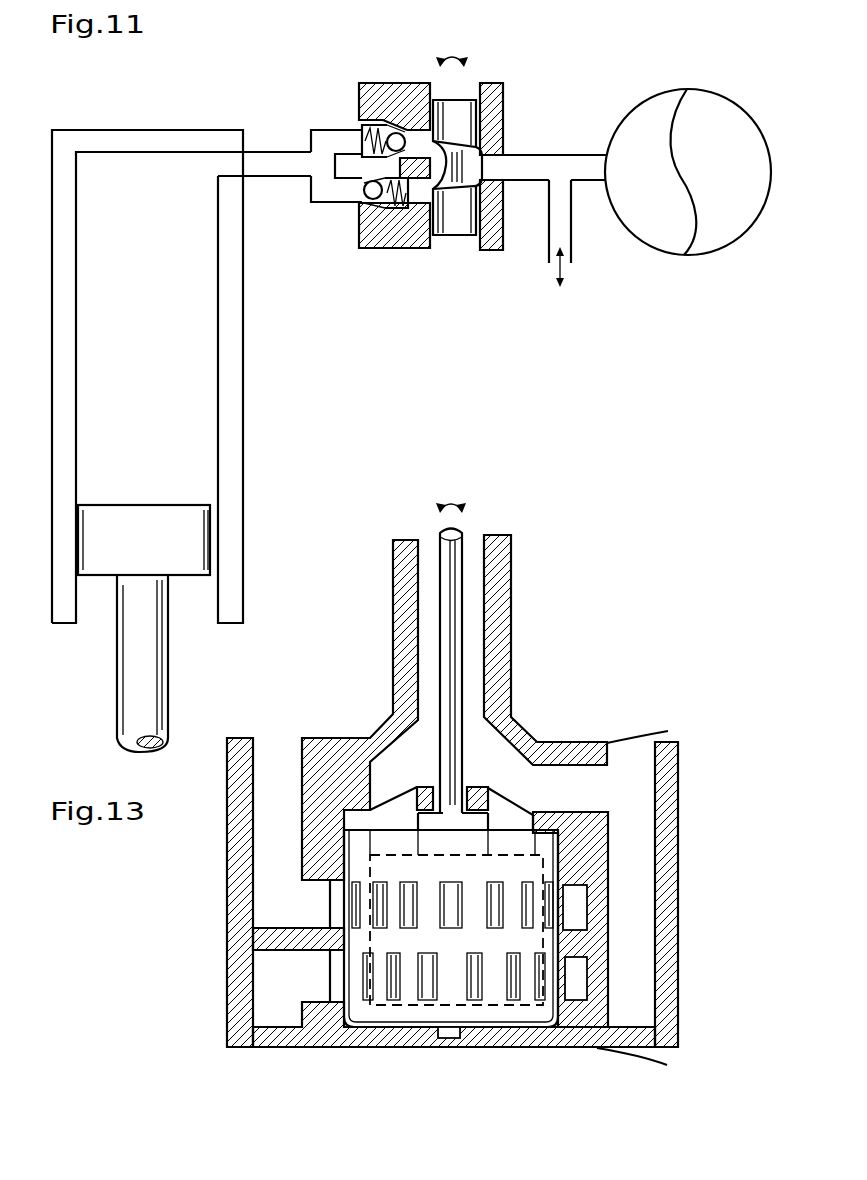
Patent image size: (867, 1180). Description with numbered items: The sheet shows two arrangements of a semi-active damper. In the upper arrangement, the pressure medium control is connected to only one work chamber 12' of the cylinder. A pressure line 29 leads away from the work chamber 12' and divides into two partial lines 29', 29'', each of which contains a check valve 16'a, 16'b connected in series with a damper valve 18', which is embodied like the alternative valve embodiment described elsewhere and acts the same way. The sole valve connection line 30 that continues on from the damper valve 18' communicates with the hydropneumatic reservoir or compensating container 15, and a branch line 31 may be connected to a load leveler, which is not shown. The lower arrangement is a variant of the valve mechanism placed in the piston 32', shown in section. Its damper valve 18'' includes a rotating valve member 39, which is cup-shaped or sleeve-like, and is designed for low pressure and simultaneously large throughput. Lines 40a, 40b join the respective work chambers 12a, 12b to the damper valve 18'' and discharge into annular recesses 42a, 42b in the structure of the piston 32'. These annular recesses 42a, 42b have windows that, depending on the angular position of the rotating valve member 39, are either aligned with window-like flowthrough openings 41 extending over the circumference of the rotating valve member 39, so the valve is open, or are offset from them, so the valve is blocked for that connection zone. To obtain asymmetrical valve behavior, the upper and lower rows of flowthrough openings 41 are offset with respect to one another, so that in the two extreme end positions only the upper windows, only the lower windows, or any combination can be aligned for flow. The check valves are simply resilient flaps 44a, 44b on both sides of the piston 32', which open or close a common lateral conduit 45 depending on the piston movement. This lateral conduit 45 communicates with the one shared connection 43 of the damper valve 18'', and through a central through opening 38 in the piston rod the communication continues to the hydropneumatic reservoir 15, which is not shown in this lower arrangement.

In FIG. 11, the work chamber 12' is at (147, 406).
In FIG. 11, the pressure line 29 is at (264, 92).
In FIG. 11, the partial line 29' is at (336, 105).
In FIG. 11, the partial line 29'' is at (326, 225).
In FIG. 11, the check valve 16'a is at (399, 82).
In FIG. 11, the check valve 16'b is at (391, 237).
In FIG. 11, the damper valve 18' is at (456, 129).
In FIG. 11, the valve connection line 30 is at (543, 165).
In FIG. 11, the branch line 31 is at (570, 222).
In FIG. 11, the hydropneumatic reservoir 15 is at (650, 115).
In FIG. 13, the central through opening 38 is at (481, 563).
In FIG. 13, the work chamber 12a is at (354, 710).
In FIG. 13, the work chamber 12b is at (438, 1057).
In FIG. 13, the shared connection 43 is at (513, 778).
In FIG. 13, the resilient flap 44a is at (628, 738).
In FIG. 13, the resilient flap 44b is at (630, 1055).
In FIG. 13, the lateral conduit 45 is at (656, 850).
In FIG. 13, the annular recess 42a is at (578, 895).
In FIG. 13, the annular recess 42b is at (578, 980).
In FIG. 13, the line 40a is at (260, 868).
In FIG. 13, the line 40b is at (260, 993).
In FIG. 13, the damper valve 18'' is at (435, 971).
In FIG. 13, the flowthrough openings 41 is at (472, 997).
In FIG. 13, the rotating valve member 39 is at (510, 995).
In FIG. 13, the piston 32' is at (570, 962).